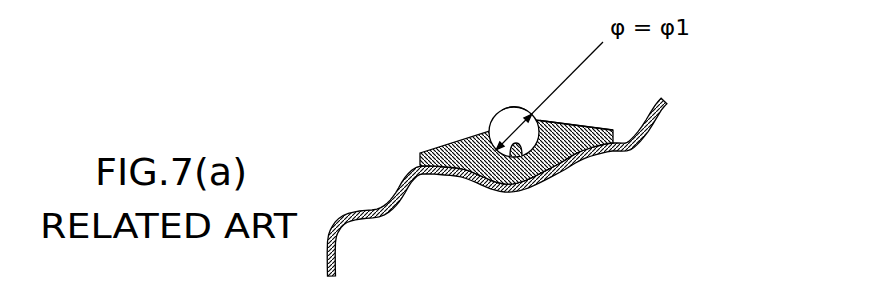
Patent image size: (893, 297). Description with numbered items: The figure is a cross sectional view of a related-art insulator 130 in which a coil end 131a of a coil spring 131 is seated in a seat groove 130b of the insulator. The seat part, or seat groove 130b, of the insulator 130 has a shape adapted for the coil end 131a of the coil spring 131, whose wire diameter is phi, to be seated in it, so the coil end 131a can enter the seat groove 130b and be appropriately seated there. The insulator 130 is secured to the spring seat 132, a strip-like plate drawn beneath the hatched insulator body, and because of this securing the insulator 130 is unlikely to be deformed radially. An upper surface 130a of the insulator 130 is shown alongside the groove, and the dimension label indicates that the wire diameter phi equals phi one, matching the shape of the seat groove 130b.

The insulator 130 is at (440, 136).
The upper surface of block 130a is at (562, 119).
The seat groove 130b is at (522, 160).
The coil spring 131 is at (485, 101).
The coil end 131a is at (514, 107).
The spring seat 132 is at (597, 147).